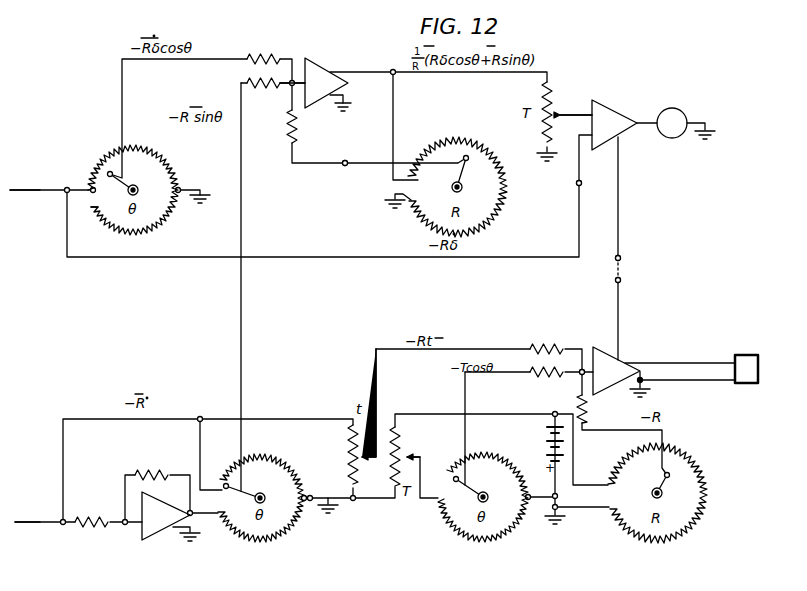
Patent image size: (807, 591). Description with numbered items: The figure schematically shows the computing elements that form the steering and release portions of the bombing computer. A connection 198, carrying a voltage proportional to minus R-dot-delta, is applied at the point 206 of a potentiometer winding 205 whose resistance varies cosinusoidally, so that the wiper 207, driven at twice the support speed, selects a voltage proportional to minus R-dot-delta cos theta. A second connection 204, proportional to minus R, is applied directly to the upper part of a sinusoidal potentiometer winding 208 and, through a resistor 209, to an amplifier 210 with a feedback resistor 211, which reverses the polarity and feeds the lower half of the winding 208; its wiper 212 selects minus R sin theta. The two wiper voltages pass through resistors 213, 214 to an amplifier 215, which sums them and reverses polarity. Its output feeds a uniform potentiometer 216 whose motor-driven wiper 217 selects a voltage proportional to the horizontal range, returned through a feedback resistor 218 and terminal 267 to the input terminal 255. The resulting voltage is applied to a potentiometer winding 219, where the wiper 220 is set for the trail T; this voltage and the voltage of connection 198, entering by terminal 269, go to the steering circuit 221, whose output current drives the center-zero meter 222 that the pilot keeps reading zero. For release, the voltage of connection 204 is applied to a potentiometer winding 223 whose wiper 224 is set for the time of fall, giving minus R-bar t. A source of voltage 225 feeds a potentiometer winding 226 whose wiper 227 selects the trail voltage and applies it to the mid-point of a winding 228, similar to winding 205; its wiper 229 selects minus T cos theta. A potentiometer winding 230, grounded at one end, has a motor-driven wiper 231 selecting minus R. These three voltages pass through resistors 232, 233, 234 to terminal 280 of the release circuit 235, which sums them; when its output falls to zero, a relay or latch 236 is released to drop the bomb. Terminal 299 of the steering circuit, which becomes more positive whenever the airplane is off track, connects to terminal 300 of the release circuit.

The connection 198 is at (36, 188).
The connection 204 is at (58, 518).
The potentiometer winding 205 is at (170, 168).
The point 206 is at (86, 214).
The wiper 207 is at (128, 181).
The potentiometer winding 208 is at (283, 474).
The resistor 209 is at (88, 530).
The amplifier 210 is at (150, 538).
The feedback resistor 211 is at (156, 468).
The wiper 212 is at (250, 494).
The resistor 213 is at (272, 54).
The resistor 214 is at (250, 80).
The amplifier 215 is at (313, 60).
The potentiometer 216 is at (500, 208).
The wiper 217 is at (464, 178).
The feedback resistor 218 is at (297, 132).
The potentiometer winding 219 is at (556, 88).
The wiper 220 is at (565, 114).
The steering circuit 221 is at (612, 108).
The meter 222 is at (675, 110).
The potentiometer winding 223 is at (348, 428).
The wiper 224 is at (377, 392).
The source of voltage 225 is at (544, 438).
The potentiometer winding 226 is at (403, 441).
The wiper 227 is at (418, 463).
The potentiometer winding 228 is at (480, 540).
The wiper 229 is at (480, 490).
The potentiometer winding 230 is at (705, 506).
The wiper 231 is at (658, 486).
The resistor 232 is at (560, 347).
The resistor 233 is at (531, 370).
The resistor 234 is at (587, 412).
The release circuit 235 is at (618, 354).
The relay or latch 236 is at (760, 368).
The terminal 255 is at (287, 88).
The terminal 267 is at (345, 172).
The terminal 269 is at (576, 183).
The terminal 280 is at (580, 374).
The terminal 299 is at (621, 257).
The terminal 300 is at (621, 281).